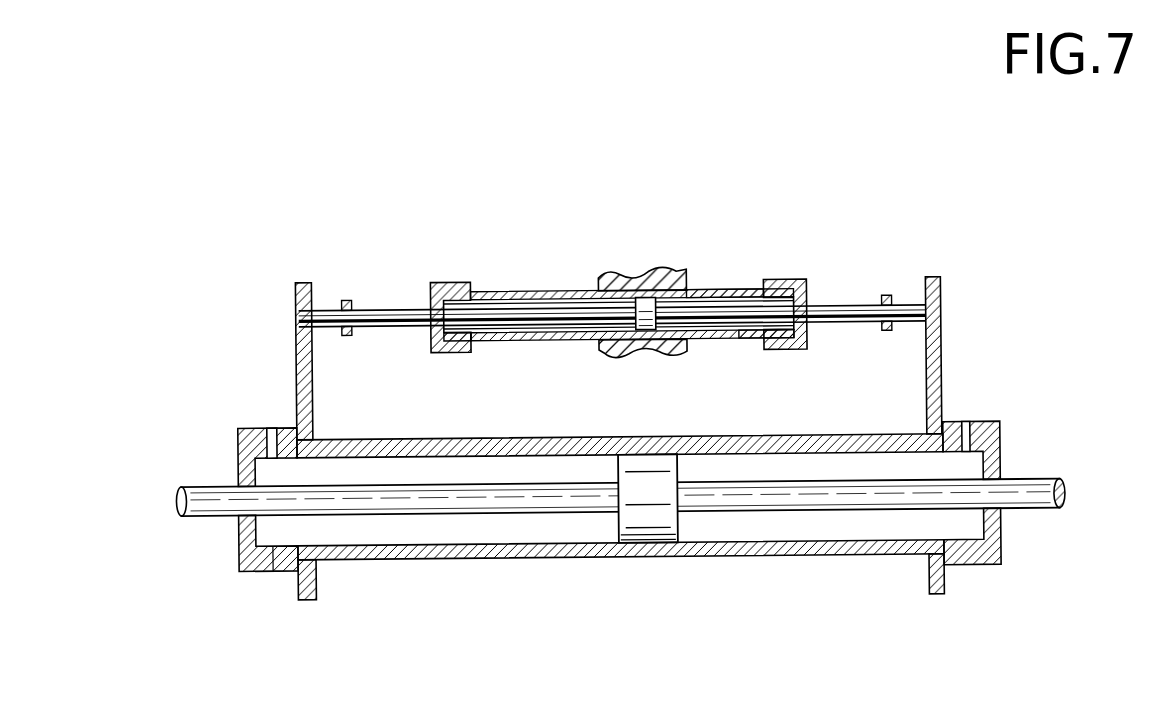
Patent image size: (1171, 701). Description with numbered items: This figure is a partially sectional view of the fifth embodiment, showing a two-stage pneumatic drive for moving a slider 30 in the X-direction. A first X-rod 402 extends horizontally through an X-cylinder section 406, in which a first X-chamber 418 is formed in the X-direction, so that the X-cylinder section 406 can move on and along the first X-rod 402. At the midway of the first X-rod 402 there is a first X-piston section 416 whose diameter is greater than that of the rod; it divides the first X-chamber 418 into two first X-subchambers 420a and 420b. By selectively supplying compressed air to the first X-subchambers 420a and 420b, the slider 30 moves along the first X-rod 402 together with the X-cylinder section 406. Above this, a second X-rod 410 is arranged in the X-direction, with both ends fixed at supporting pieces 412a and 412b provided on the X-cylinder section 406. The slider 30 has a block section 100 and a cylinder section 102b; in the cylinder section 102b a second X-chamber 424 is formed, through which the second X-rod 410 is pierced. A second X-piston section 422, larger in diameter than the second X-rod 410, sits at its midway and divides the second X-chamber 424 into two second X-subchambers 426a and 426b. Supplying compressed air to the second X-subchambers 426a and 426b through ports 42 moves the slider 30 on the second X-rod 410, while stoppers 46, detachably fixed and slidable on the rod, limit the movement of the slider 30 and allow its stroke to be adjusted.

The slider 30 is at (681, 195).
The port 42 is at (270, 428).
The stopper 46 is at (347, 299).
The block section 100 is at (616, 273).
The cylinder section 102b is at (722, 289).
The first X-rod 402 is at (1044, 478).
The X-cylinder section 406 is at (845, 551).
The second X-rod 410 is at (865, 318).
The supporting piece 412a is at (945, 334).
The supporting piece 412b is at (297, 332).
The first X-piston section 416 is at (653, 520).
The first X-chamber 418 is at (484, 555).
The first X-subchamber 420a is at (965, 522).
The first X-subchamber 420b is at (286, 530).
The second X-piston section 422 is at (651, 332).
The second X-chamber 424 is at (538, 334).
The second X-subchamber 426a is at (750, 326).
The second X-subchamber 426b is at (452, 330).